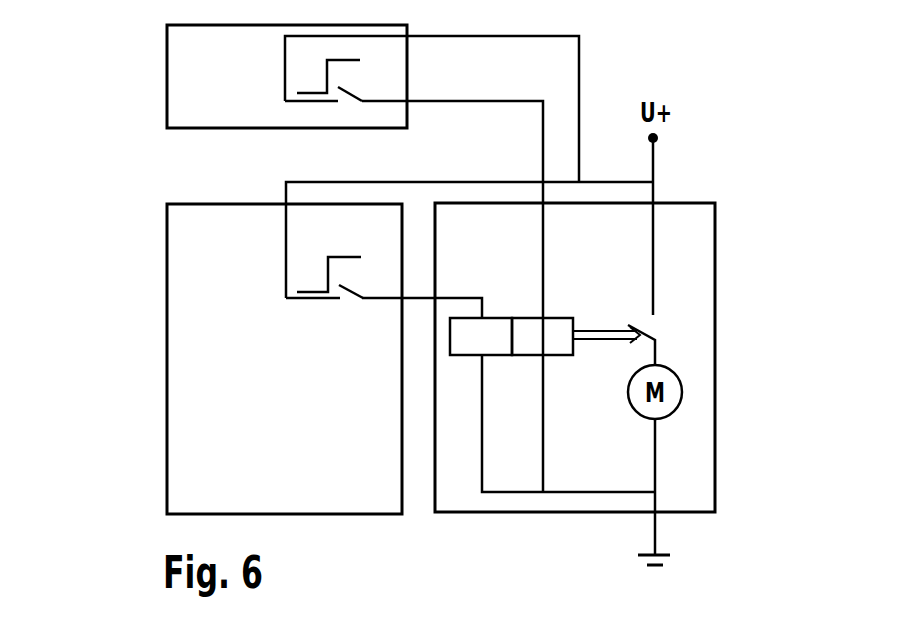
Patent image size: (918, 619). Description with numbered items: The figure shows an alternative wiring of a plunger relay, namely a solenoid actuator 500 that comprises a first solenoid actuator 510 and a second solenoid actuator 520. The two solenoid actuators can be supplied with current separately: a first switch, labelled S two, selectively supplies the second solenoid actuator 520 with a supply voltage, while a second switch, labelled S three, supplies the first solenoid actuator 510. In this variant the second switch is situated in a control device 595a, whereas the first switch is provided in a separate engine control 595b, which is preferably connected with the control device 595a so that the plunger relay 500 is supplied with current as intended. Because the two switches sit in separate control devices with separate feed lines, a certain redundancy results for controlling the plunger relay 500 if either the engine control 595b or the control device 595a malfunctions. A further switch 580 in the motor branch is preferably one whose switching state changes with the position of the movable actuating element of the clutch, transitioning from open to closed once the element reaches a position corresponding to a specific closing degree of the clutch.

The engine control 595b is at (187, 80).
The control device 595a is at (187, 250).
The solenoid actuator 500 is at (573, 402).
The first solenoid actuator 510 is at (498, 328).
The second solenoid actuator 520 is at (562, 301).
The switch 580 is at (658, 330).